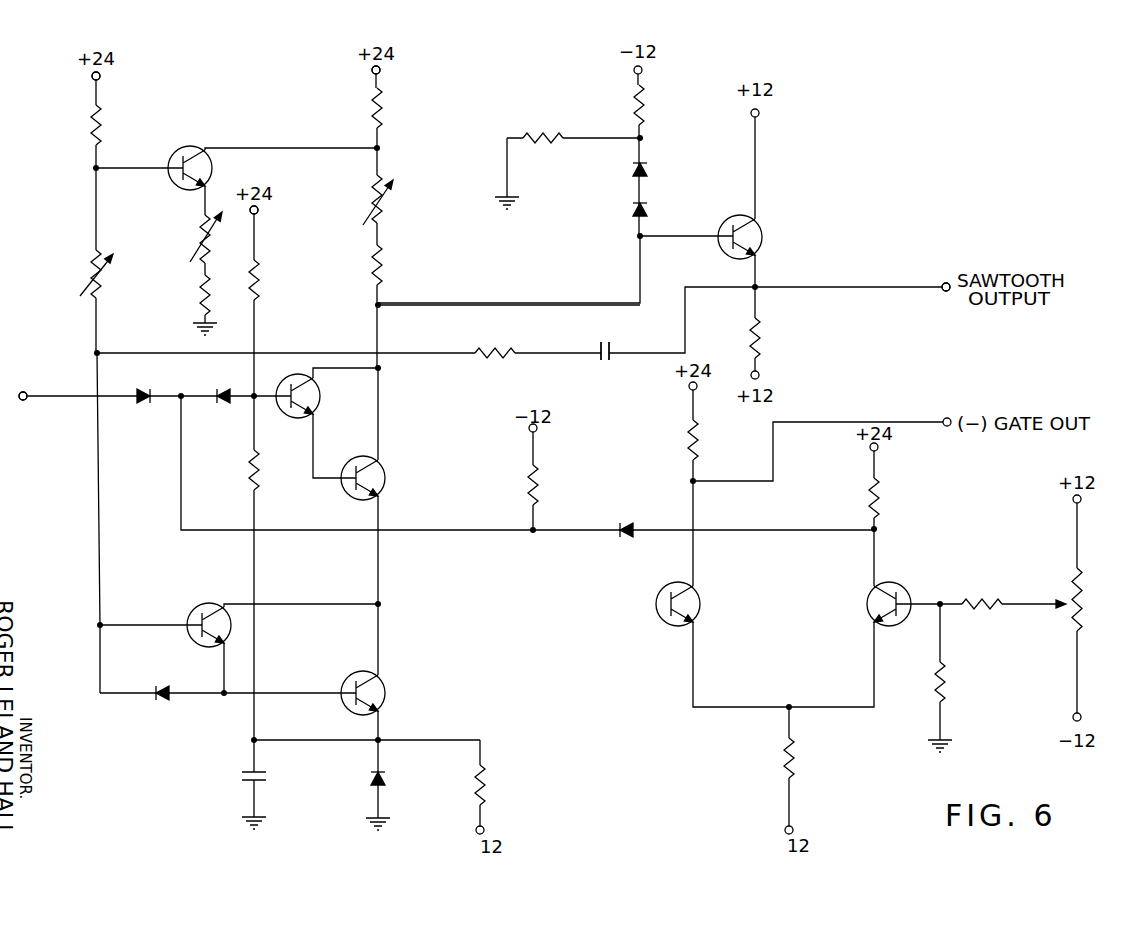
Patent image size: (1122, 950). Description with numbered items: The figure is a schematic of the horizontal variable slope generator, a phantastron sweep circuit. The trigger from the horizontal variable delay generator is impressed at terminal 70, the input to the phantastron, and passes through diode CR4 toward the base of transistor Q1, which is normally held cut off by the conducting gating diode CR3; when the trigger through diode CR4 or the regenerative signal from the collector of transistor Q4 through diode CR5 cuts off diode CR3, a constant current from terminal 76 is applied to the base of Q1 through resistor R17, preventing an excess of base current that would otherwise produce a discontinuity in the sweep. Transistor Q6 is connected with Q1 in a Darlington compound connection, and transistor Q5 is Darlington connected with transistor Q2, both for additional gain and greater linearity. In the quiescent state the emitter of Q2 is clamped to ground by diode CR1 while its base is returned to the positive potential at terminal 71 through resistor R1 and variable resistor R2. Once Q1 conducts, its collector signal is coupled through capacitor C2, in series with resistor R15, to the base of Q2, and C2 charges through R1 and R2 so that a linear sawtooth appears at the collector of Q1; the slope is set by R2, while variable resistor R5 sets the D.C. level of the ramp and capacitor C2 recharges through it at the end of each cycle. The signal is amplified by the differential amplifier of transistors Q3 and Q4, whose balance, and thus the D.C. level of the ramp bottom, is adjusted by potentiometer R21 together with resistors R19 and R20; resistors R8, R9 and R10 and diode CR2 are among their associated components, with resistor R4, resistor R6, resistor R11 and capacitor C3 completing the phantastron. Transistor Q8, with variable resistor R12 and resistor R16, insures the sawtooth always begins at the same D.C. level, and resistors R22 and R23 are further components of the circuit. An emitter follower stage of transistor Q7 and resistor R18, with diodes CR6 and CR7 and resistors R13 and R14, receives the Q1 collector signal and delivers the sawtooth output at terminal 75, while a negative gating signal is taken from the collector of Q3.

The input terminal 70 is at (24, 400).
The terminal 71 is at (100, 79).
The sawtooth output terminal 75 is at (372, 73).
The terminal 76 is at (258, 213).
The resistor R1 is at (89, 120).
The variable resistor R2 is at (90, 270).
The resistor R4 is at (248, 472).
The variable resistor R5 is at (398, 205).
The resistor R6 is at (487, 775).
The resistor R8 is at (683, 445).
The resistor R9 is at (797, 766).
The resistor R10 is at (882, 490).
The resistor R11 is at (528, 475).
The variable resistor R12 is at (200, 230).
The resistor R13 is at (647, 118).
The resistor R14 is at (559, 133).
The resistor R15 is at (488, 360).
The resistor R16 is at (200, 303).
The resistor R17 is at (258, 266).
The resistor R18 is at (765, 337).
The resistor R19 is at (949, 690).
The resistor R20 is at (985, 592).
The potentiometer R21 is at (1084, 600).
The resistor R22 is at (383, 105).
The resistor R23 is at (383, 258).
The transistor Q1 is at (320, 402).
The transistor Q2 is at (204, 604).
The transistor Q3 is at (692, 590).
The transistor Q4 is at (907, 582).
The transistor Q5 is at (387, 695).
The transistor Q6 is at (385, 467).
The transistor Q7 is at (762, 232).
The transistor Q8 is at (212, 170).
The diode CR1 is at (388, 784).
The diode CR2 is at (168, 700).
The diode CR3 is at (228, 403).
The diode CR4 is at (143, 403).
The diode CR5 is at (623, 522).
The diode CR6 is at (650, 172).
The diode CR7 is at (633, 215).
The capacitor C2 is at (610, 345).
The capacitor C3 is at (250, 772).